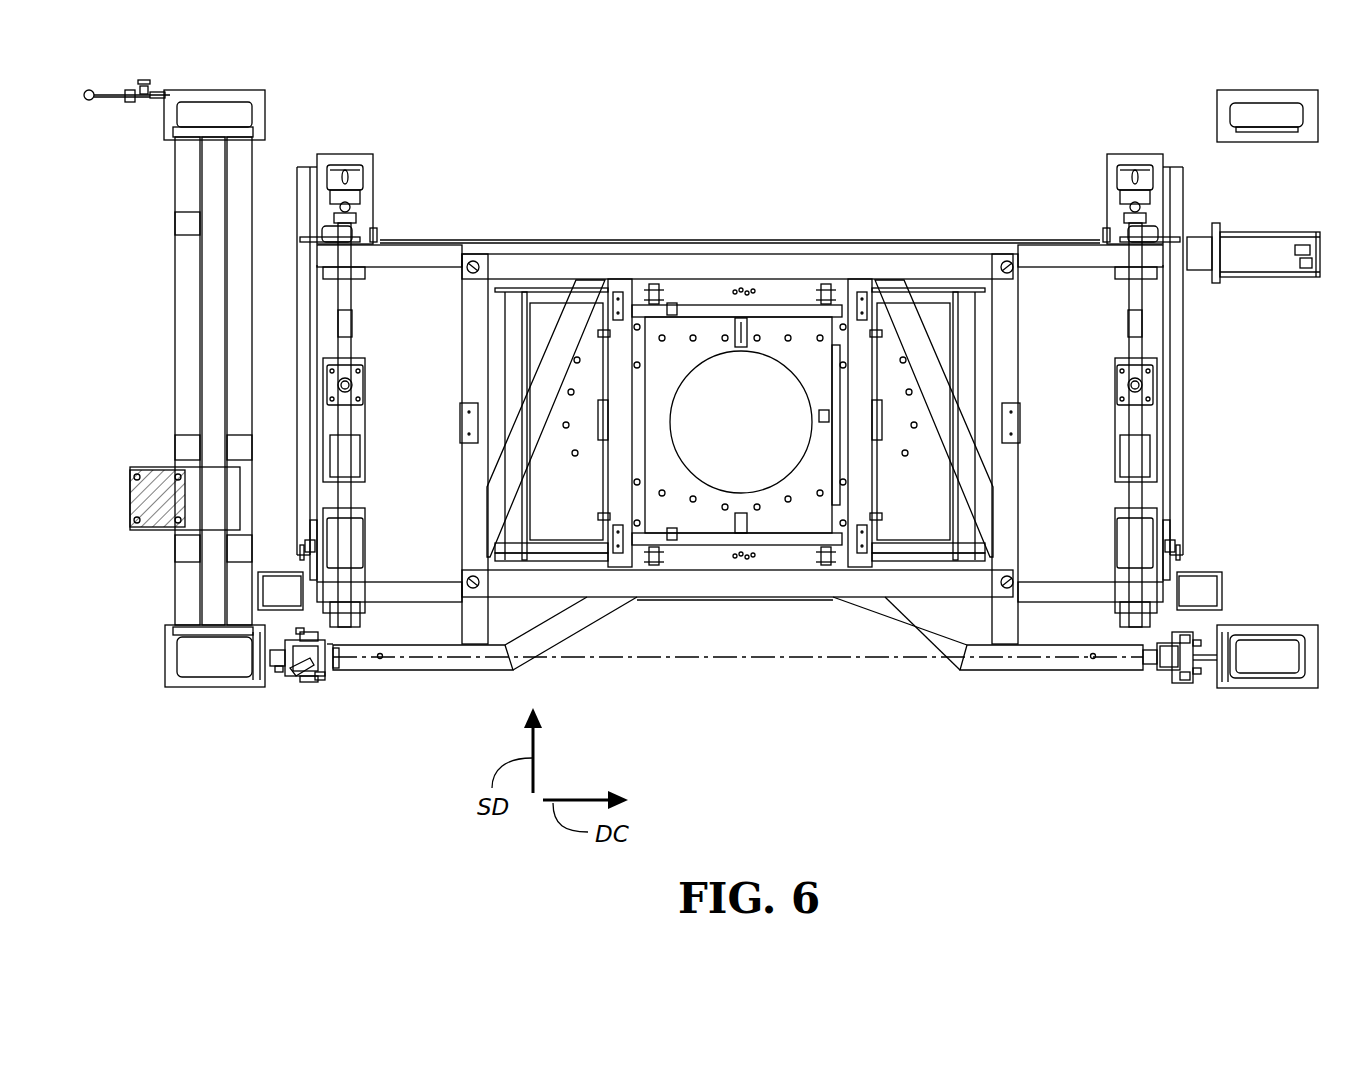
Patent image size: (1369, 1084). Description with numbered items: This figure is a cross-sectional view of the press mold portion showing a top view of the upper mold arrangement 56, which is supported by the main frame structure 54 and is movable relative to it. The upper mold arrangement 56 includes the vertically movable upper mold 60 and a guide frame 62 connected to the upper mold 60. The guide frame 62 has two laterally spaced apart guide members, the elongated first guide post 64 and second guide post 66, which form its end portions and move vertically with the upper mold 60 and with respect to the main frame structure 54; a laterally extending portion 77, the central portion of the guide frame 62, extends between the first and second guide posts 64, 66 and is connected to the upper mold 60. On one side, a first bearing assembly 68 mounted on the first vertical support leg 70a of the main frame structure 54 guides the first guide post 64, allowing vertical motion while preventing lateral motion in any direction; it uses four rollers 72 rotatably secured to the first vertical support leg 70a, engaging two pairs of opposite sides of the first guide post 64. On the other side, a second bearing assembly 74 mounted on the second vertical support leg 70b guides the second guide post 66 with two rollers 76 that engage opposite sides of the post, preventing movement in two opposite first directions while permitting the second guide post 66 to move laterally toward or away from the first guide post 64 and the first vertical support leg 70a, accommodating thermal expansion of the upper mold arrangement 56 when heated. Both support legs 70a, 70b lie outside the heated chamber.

The main frame structure 54 is at (160, 428).
The upper mold arrangement 56 is at (740, 399).
The upper mold 60 is at (803, 328).
The guide frame 62 is at (738, 684).
The first guide post 64 is at (305, 680).
The second guide post 66 is at (1165, 670).
The first bearing assembly 68 is at (319, 702).
The first vertical support leg 70a is at (217, 690).
The second vertical support leg 70b is at (1265, 688).
The rollers 72 is at (313, 680).
The second bearing assembly 74 is at (1171, 663).
The rollers 76 is at (1167, 638).
The laterally extending portion 77 is at (943, 662).